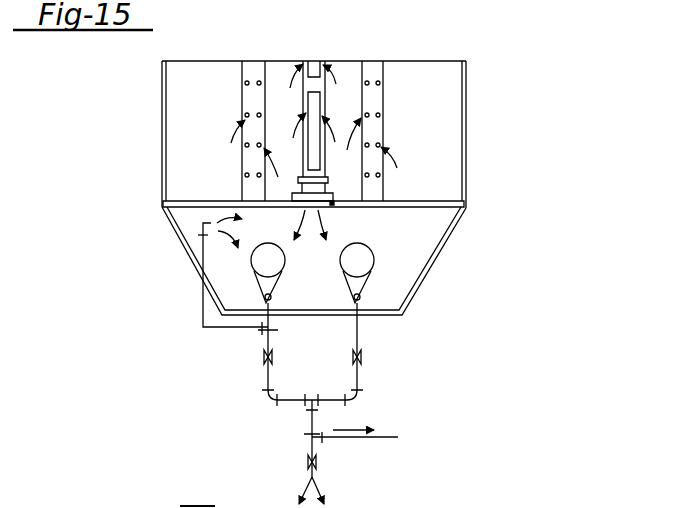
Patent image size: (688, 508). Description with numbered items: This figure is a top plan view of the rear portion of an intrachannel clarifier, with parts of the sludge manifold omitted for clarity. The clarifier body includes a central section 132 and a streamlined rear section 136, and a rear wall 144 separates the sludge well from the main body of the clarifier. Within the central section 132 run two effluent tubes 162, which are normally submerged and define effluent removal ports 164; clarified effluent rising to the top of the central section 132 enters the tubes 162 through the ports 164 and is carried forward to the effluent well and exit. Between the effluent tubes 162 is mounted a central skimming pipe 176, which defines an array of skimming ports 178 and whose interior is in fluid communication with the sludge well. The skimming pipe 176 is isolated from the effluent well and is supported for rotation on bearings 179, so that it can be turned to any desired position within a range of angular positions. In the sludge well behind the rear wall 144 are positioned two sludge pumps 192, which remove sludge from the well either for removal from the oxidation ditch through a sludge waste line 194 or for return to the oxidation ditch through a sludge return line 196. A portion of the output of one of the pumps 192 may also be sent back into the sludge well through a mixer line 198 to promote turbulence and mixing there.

The central section 132 is at (474, 81).
The rear section 136 is at (424, 289).
The rear wall 144 is at (427, 202).
The effluent tubes 162 is at (247, 100).
The effluent removal ports 164 is at (247, 146).
The skimming pipe 176 is at (328, 84).
The skimming ports 178 is at (318, 100).
The bearings 179 is at (333, 205).
The sludge pumps 192 is at (252, 260).
The sludge waste line 194 is at (373, 438).
The sludge return line 196 is at (305, 480).
The mixer line 198 is at (203, 293).